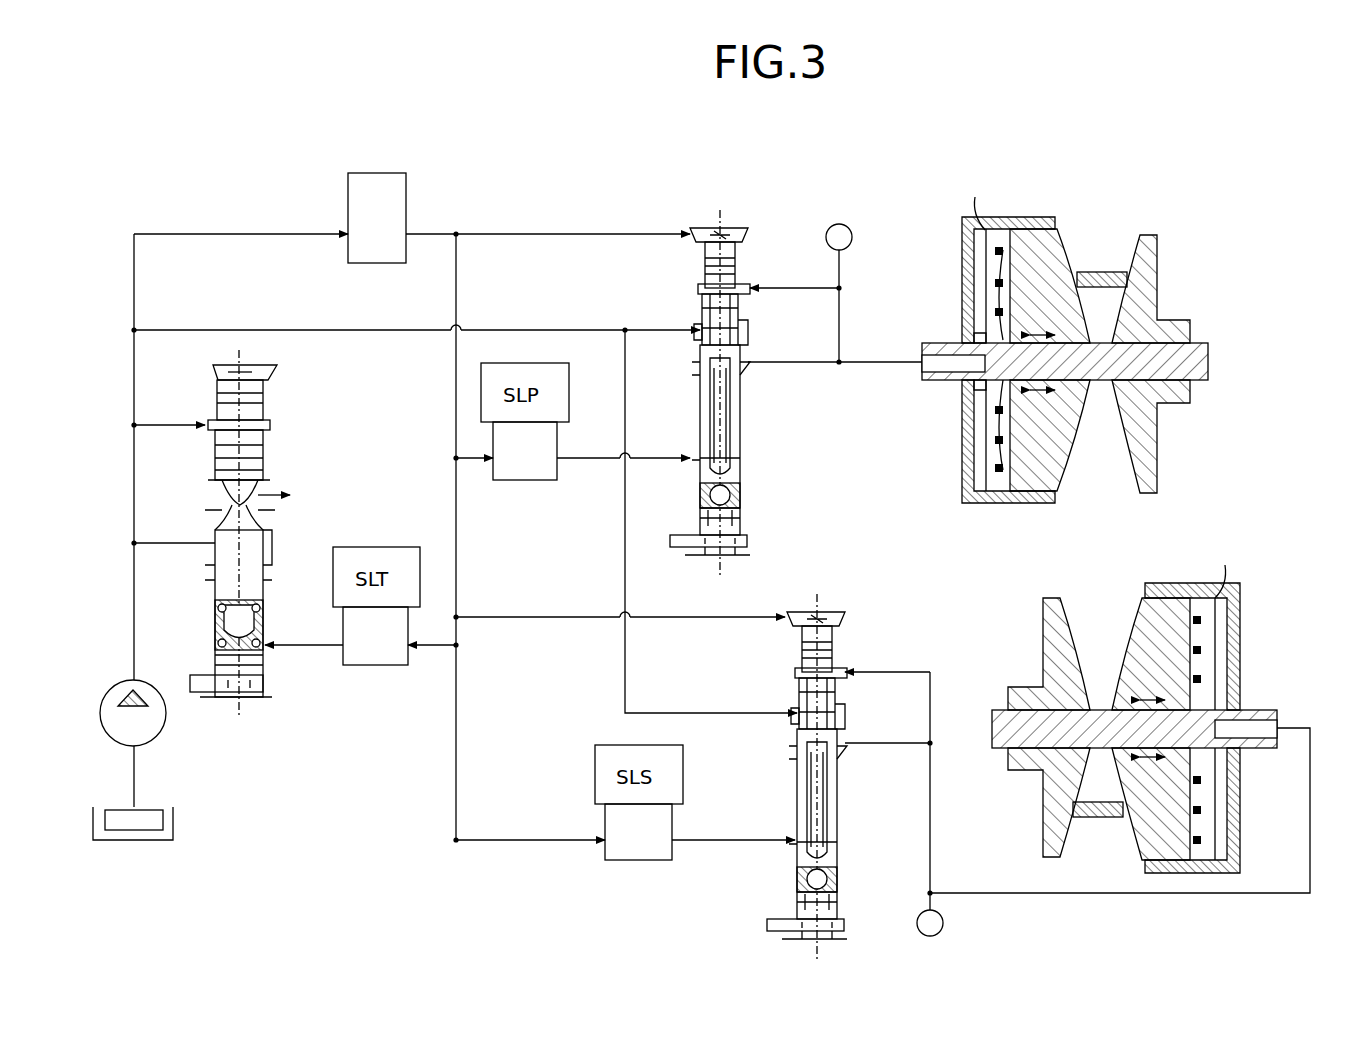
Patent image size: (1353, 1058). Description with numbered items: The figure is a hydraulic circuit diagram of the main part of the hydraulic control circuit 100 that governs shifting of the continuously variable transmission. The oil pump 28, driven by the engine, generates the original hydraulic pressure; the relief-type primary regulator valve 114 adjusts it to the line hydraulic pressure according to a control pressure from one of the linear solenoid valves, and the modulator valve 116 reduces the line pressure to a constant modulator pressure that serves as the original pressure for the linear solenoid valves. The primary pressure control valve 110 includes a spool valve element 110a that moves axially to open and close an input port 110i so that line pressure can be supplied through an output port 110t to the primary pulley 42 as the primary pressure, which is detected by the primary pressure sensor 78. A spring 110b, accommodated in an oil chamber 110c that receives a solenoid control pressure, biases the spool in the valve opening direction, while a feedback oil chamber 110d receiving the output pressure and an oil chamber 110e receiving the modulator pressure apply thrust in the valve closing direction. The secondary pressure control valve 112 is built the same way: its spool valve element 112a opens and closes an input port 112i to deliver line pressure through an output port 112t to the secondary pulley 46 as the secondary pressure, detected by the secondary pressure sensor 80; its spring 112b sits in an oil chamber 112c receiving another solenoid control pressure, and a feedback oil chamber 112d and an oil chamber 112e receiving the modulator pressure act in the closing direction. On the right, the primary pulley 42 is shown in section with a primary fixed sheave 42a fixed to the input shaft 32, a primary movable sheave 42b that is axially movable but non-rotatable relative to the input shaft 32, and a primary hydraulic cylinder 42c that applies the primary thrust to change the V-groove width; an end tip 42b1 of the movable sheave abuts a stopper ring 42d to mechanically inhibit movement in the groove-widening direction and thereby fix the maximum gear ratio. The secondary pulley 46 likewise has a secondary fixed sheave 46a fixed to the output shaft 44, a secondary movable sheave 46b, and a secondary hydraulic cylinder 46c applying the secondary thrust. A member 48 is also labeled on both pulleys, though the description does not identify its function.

The hydraulic control circuit 100 is at (732, 150).
The primary pressure control valve 110 is at (752, 212).
The spool valve element 110a is at (753, 440).
The spring 110b is at (757, 499).
The oil chamber 110c is at (761, 422).
The feedback oil chamber 110d is at (687, 281).
The oil chamber 110e is at (751, 240).
The input port 110i is at (667, 321).
The output port 110t is at (773, 337).
The secondary pressure control valve 112 is at (850, 592).
The spool valve element 112a is at (850, 824).
The spring 112b is at (854, 883).
The oil chamber 112c is at (858, 806).
The feedback oil chamber 112d is at (784, 665).
The oil chamber 112e is at (848, 624).
The input port 112i is at (764, 705).
The output port 112t is at (870, 721).
The primary regulator valve 114 is at (258, 712).
The modulator valve 116 is at (372, 178).
The oil pump 28 is at (160, 736).
The primary pressure sensor 78 is at (846, 226).
The secondary pressure sensor 80 is at (943, 922).
The primary pulley 42 is at (1150, 205).
The primary fixed sheave 42a is at (1158, 262).
The primary movable sheave 42b is at (1075, 232).
The end tip 42b1 is at (995, 340).
The primary hydraulic cylinder 42c is at (962, 246).
The stopper ring 42d is at (968, 340).
The input shaft 32 is at (1205, 345).
The bearing / support member 48 is at (1105, 272).
The secondary pulley 46 is at (1050, 588).
The secondary fixed sheave 46a is at (1048, 630).
The secondary movable sheave 46b is at (1140, 600).
The secondary hydraulic cylinder 46c is at (1240, 656).
The output shaft 44 is at (1000, 712).